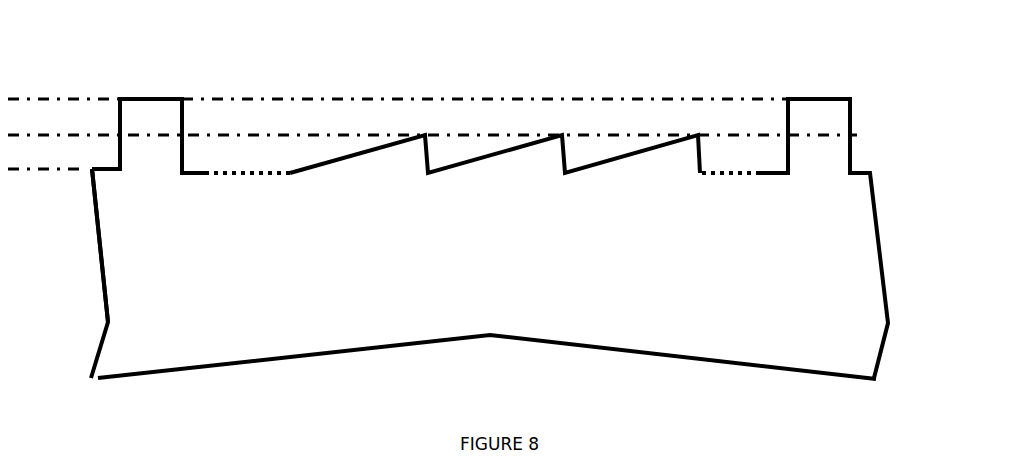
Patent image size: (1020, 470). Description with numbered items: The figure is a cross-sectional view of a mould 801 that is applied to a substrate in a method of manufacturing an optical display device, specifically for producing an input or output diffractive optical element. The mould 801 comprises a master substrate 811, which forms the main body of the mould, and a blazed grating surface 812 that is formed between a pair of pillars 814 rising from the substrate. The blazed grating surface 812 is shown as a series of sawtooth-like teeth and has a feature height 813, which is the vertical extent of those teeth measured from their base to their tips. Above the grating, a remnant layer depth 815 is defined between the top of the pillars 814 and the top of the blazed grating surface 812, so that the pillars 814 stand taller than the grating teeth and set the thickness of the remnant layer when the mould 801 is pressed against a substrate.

The mould 801 is at (660, 378).
The master substrate 811 is at (112, 268).
The blazed grating surface 812 is at (717, 90).
The feature height 813 is at (37, 140).
The pillars 814 is at (145, 88).
The remnant layer depth 815 is at (37, 104).